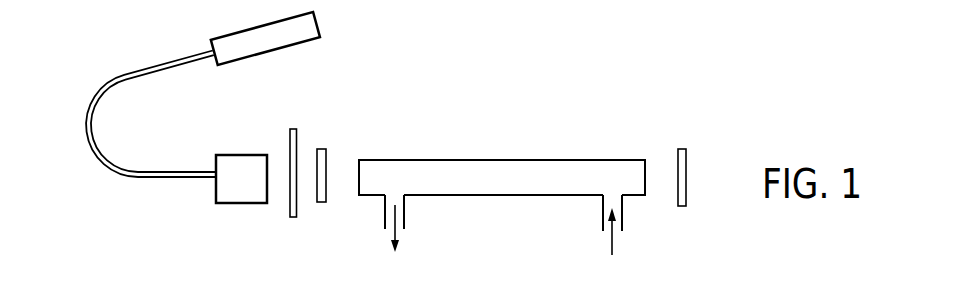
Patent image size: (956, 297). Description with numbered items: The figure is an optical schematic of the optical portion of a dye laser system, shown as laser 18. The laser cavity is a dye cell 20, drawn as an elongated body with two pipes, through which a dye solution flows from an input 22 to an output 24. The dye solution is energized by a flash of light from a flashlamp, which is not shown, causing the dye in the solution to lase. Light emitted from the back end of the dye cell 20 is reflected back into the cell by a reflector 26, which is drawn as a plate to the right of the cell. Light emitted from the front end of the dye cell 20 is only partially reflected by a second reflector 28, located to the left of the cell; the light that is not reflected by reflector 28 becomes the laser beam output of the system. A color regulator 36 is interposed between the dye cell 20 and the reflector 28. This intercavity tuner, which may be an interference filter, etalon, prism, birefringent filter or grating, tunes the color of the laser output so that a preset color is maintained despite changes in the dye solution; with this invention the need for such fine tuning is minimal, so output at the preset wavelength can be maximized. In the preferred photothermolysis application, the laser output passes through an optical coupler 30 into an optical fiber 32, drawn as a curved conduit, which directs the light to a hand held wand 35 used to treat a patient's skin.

The laser 18 is at (606, 122).
The dye cell 20 is at (495, 160).
The input 22 is at (602, 214).
The output 24 is at (404, 220).
The reflector 26 is at (682, 206).
The reflector 28 is at (295, 217).
The optical coupler 30 is at (240, 154).
The optical fiber 32 is at (98, 156).
The hand held wand 35 is at (285, 47).
The color regulator 36 is at (320, 147).